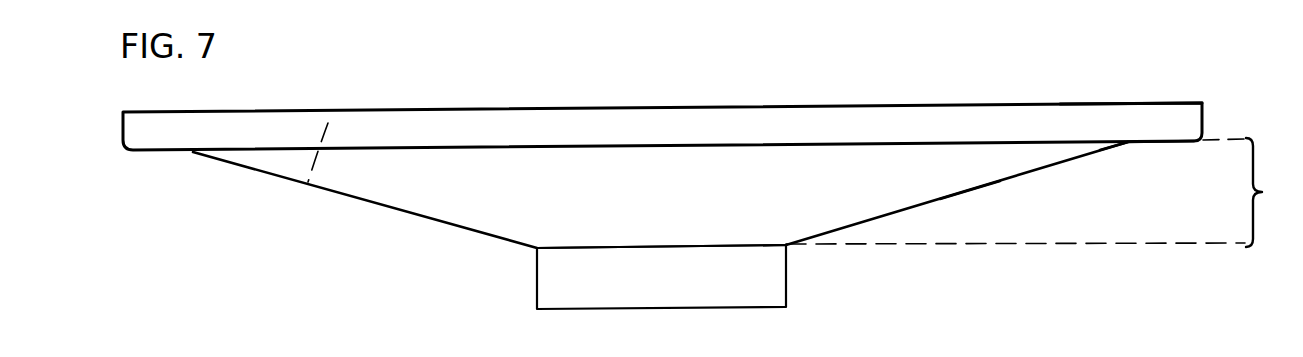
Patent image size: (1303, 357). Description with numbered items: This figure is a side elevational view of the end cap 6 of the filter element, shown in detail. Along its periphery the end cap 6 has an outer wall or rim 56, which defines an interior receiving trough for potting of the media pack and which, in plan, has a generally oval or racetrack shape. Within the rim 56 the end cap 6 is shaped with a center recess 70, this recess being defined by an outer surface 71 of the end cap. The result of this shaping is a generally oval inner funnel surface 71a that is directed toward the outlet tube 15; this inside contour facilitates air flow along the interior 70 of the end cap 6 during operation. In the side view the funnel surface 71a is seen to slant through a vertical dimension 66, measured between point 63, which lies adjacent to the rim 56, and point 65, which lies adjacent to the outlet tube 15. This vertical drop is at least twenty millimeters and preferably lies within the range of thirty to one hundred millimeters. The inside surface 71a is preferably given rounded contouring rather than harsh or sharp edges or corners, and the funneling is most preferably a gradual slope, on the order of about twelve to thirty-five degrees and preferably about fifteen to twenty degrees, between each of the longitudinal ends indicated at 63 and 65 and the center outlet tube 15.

The end cap 6 is at (895, 117).
The rim 56 is at (1068, 115).
The center recess 70 is at (328, 123).
The outer surface 71 is at (877, 218).
The inner funnel surface 71a is at (968, 179).
The point adjacent to rim 63 is at (1127, 144).
The point adjacent to outlet tube 65 is at (788, 248).
The outlet tube 15 is at (786, 290).
The vertical dimension 66 is at (1036, 192).